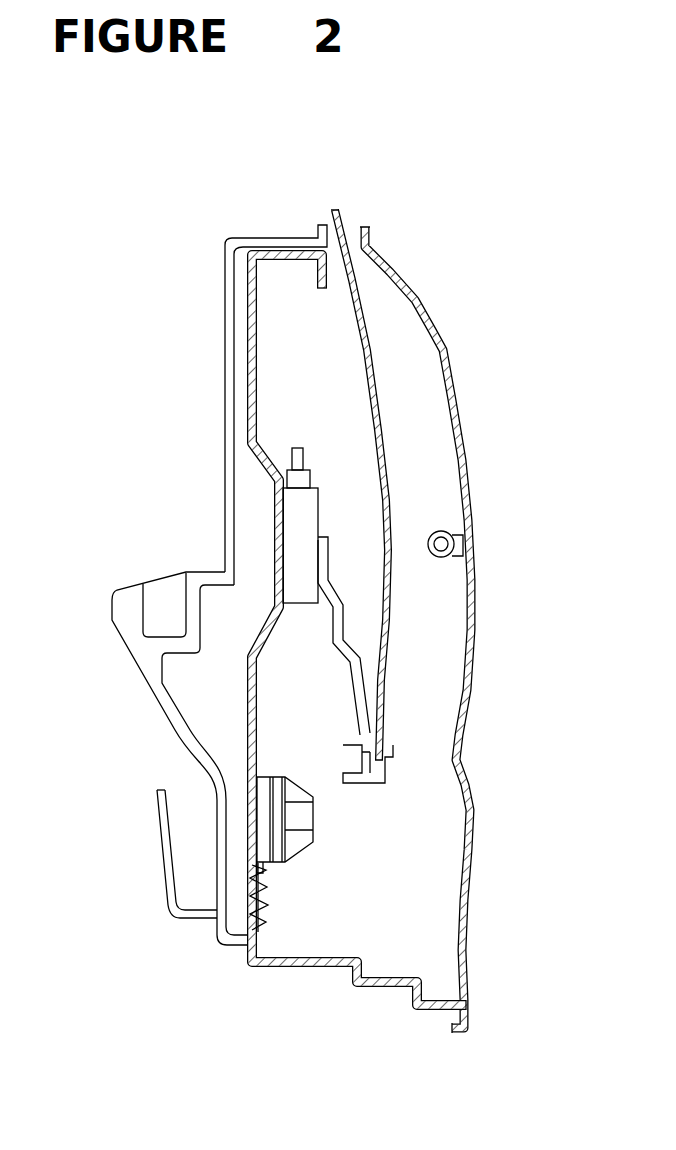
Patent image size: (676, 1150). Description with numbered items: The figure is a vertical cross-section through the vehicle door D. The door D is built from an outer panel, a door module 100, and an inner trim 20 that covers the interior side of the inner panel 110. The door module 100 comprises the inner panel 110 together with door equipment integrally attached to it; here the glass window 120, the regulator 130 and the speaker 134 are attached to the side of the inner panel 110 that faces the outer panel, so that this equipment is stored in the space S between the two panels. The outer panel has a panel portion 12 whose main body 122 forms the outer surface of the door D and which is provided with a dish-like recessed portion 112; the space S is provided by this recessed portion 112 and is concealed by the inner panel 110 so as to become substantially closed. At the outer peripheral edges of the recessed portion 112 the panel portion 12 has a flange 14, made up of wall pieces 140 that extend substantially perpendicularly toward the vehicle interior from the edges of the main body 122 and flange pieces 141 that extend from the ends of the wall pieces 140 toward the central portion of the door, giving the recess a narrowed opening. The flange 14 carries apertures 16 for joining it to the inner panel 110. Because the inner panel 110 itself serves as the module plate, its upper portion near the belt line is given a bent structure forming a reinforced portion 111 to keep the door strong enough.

The panel portion 12 is at (476, 859).
The flange 14 is at (286, 970).
The aperture 16 is at (270, 888).
The inner trim 20 is at (183, 713).
The door module 100 is at (232, 411).
The inner panel 110 is at (253, 438).
The reinforced portion 111 is at (270, 250).
The recessed portion 112 is at (393, 943).
The glass window 120 is at (392, 495).
The main body 122 is at (467, 935).
The regulator 130 is at (307, 513).
The speaker 134 is at (267, 823).
The wall piece 140 is at (368, 988).
The flange piece 141 is at (228, 945).
The door D is at (386, 229).